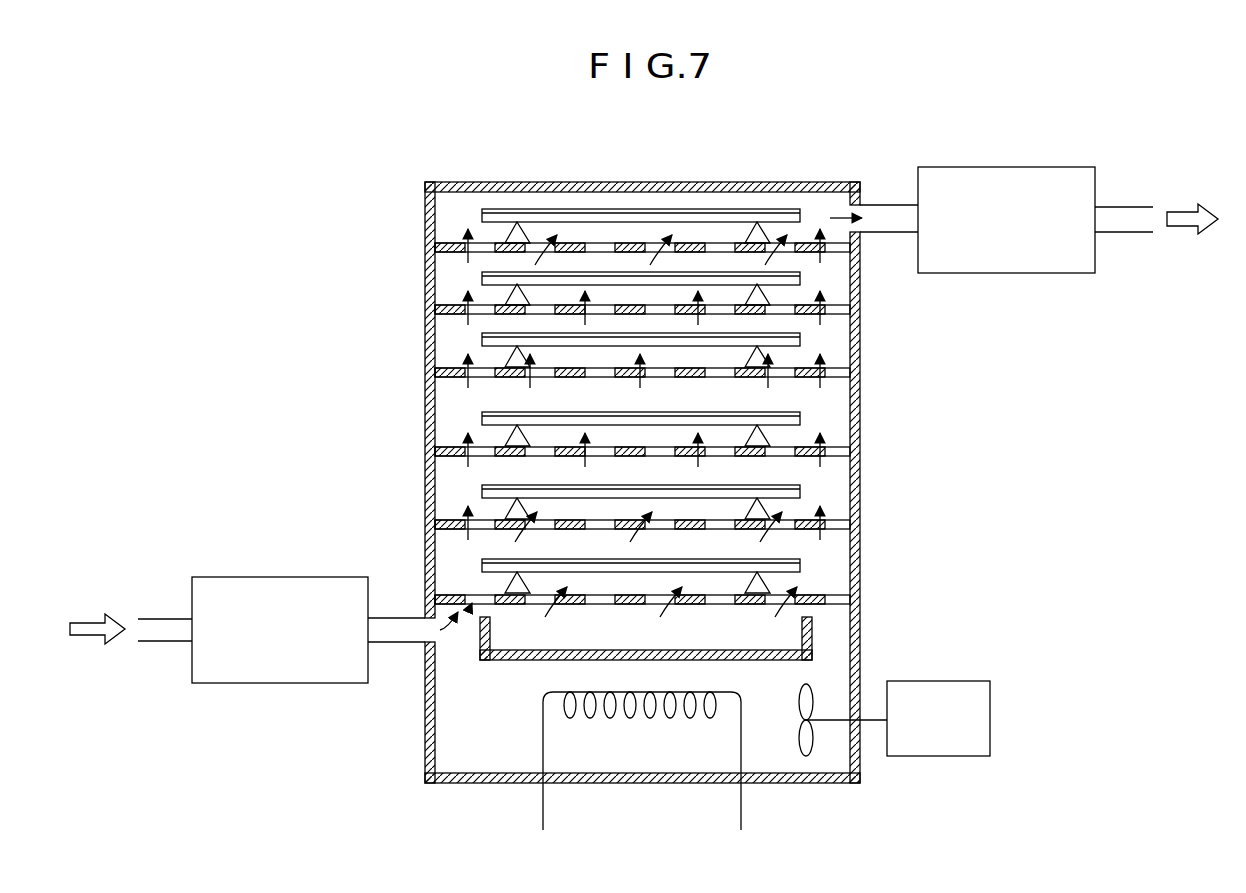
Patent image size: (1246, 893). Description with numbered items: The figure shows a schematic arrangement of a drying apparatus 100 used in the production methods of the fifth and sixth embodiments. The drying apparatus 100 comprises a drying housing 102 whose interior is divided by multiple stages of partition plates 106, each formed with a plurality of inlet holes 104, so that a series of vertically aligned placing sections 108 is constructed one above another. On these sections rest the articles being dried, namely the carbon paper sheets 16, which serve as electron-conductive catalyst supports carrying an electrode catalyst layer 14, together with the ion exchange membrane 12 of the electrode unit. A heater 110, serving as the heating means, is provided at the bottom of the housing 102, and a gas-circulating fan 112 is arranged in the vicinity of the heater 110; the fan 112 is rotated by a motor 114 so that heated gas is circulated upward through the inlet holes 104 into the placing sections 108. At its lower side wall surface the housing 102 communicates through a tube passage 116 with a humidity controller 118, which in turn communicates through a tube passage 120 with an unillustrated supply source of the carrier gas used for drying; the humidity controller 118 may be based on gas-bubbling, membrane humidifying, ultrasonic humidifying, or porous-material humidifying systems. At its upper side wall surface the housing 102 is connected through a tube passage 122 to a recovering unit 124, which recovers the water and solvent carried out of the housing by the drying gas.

The drying apparatus 100 is at (815, 142).
The drying housing 102 is at (861, 432).
The electrode catalyst layer 14 is at (507, 208).
The carbon paper sheet 16 is at (482, 218).
The ion exchange membrane 12 is at (637, 232).
The inlet holes 104 is at (452, 455).
The partition plates 106 is at (440, 314).
The placing sections 108 is at (840, 292).
The heater 110 is at (543, 718).
The gas-circulating fan 112 is at (800, 708).
The motor 114 is at (955, 681).
The tube passage 116 is at (396, 645).
The humidity controller 118 is at (258, 577).
The tube passage 120 is at (160, 645).
The tube passage 122 is at (890, 205).
The recovering unit 124 is at (985, 167).